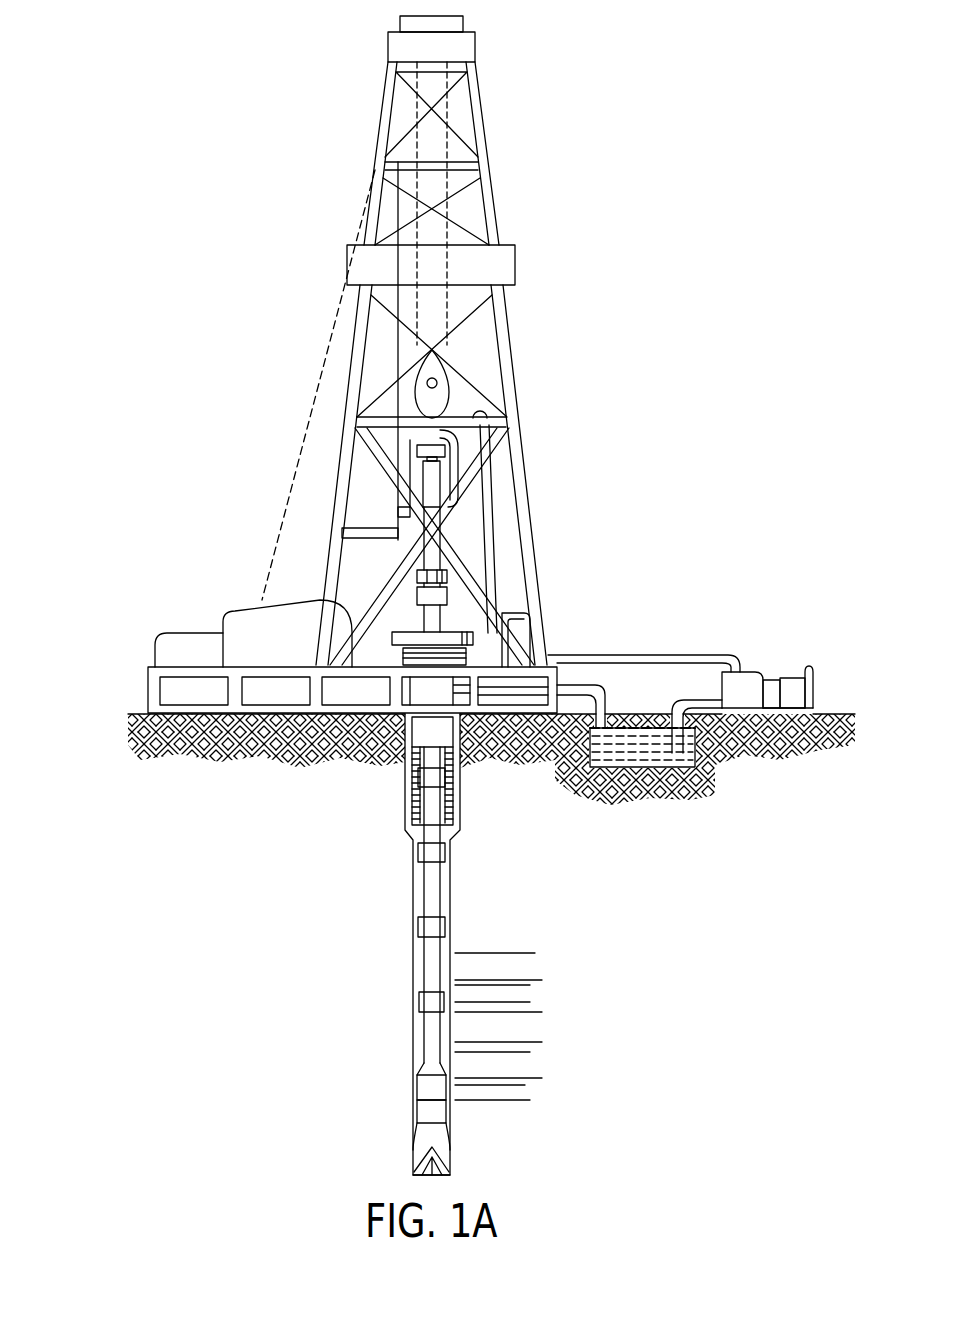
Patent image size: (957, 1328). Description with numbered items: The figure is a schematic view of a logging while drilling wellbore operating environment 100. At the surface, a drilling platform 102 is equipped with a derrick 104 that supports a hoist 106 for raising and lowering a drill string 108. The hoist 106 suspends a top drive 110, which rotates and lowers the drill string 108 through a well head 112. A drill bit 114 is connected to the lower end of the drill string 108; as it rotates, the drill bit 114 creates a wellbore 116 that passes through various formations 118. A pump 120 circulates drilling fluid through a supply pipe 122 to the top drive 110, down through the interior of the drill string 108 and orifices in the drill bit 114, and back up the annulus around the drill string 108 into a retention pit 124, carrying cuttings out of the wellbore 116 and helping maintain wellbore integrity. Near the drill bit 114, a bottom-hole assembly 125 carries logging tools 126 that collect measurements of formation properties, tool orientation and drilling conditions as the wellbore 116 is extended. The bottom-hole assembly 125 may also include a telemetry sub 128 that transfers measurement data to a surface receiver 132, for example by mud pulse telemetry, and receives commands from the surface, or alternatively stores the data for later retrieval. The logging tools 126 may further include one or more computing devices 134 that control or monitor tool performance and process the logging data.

The logging while drilling (LWD) wellbore operating environment 100 is at (310, 71).
The drilling platform 102 is at (147, 688).
The derrick 104 is at (490, 198).
The hoist 106 is at (450, 390).
The drill string 108 is at (442, 892).
The top drive 110 is at (440, 468).
The well head 112 is at (455, 630).
The drill bit 114 is at (452, 1160).
The wellbore 116 is at (449, 917).
The formations 118 is at (543, 947).
The pump 120 is at (750, 675).
The supply pipe 122 is at (640, 655).
The retention pit 124 is at (637, 757).
The bottom-hole assembly 125 is at (340, 1060).
The logging tools 126 is at (425, 1113).
The telemetry sub 128 is at (423, 1085).
The surface receiver 132 is at (448, 578).
The computing devices 134 is at (432, 1120).